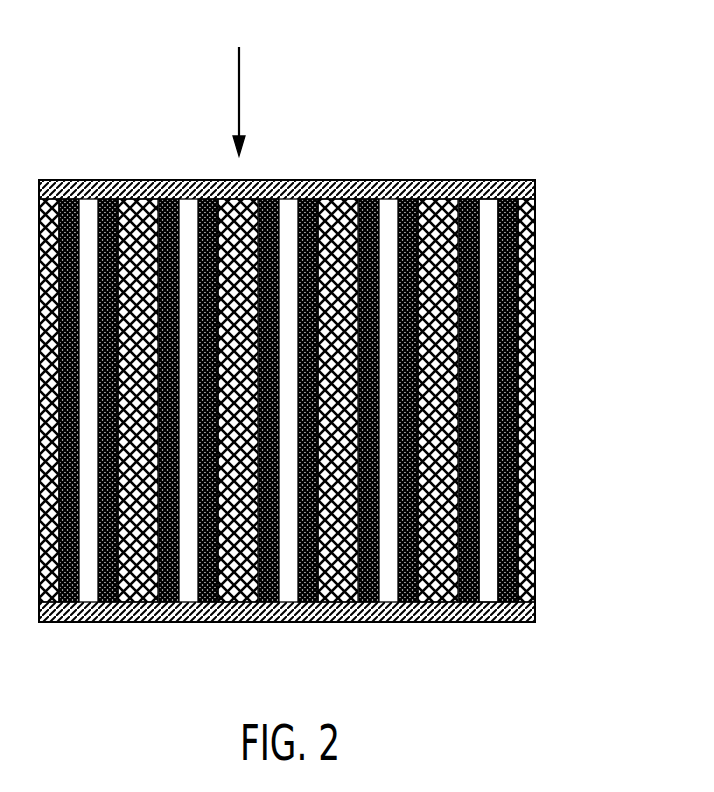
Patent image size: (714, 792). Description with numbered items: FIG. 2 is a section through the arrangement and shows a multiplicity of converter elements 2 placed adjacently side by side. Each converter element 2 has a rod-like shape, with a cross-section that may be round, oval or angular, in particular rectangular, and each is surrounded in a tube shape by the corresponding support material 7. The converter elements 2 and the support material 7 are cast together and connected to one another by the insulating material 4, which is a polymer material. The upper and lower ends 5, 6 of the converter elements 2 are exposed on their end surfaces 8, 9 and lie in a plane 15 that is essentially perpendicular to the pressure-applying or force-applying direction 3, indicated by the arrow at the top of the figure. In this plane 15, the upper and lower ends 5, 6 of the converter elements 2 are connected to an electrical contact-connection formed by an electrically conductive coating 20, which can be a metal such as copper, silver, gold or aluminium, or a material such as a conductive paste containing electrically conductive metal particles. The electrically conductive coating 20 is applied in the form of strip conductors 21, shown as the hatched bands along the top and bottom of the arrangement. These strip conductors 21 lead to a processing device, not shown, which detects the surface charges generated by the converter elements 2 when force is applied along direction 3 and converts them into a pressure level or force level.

The converter element 2 is at (478, 278).
The pressure-applying or force-applying direction 3 is at (240, 83).
The insulating material 4 is at (313, 368).
The upper end 5 is at (485, 181).
The lower end 6 is at (480, 622).
The support material 7 is at (535, 372).
The end surface 8 is at (491, 169).
The end surface 9 is at (490, 632).
The plane 15 is at (74, 180).
The electrically conductive coating 20 is at (355, 181).
The strip conductors 21 is at (381, 359).